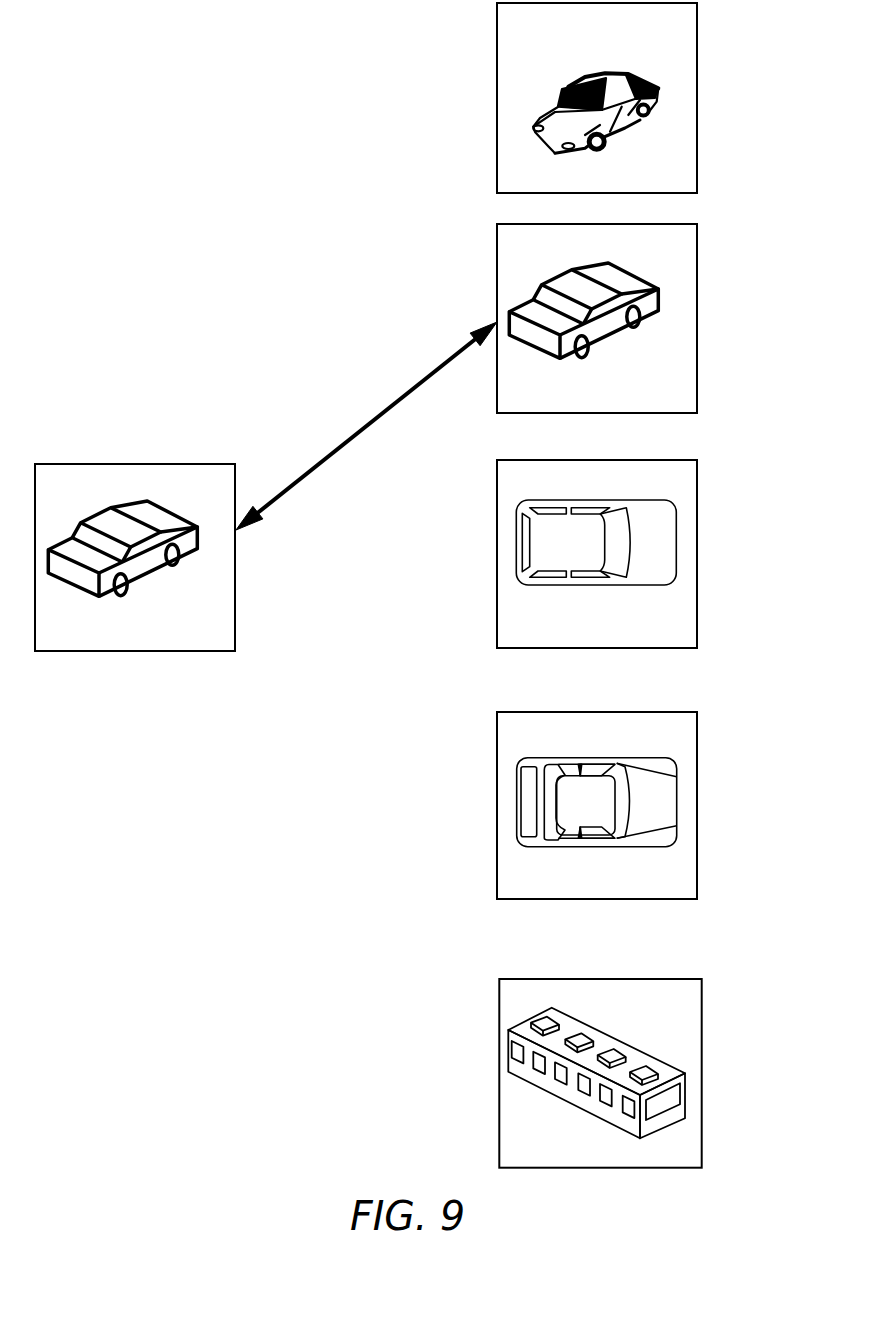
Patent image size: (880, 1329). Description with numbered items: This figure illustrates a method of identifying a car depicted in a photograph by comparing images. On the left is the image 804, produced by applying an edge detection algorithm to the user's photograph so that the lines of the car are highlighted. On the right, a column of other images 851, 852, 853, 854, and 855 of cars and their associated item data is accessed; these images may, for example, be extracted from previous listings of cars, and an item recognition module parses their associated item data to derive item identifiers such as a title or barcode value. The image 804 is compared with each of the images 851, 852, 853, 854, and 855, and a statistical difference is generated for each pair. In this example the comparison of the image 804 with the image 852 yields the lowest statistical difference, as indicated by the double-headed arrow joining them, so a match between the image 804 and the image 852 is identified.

The image 804 is at (135, 538).
The image 851 is at (640, 98).
The image 852 is at (640, 318).
The image 853 is at (640, 554).
The image 854 is at (640, 805).
The image 855 is at (642, 1073).